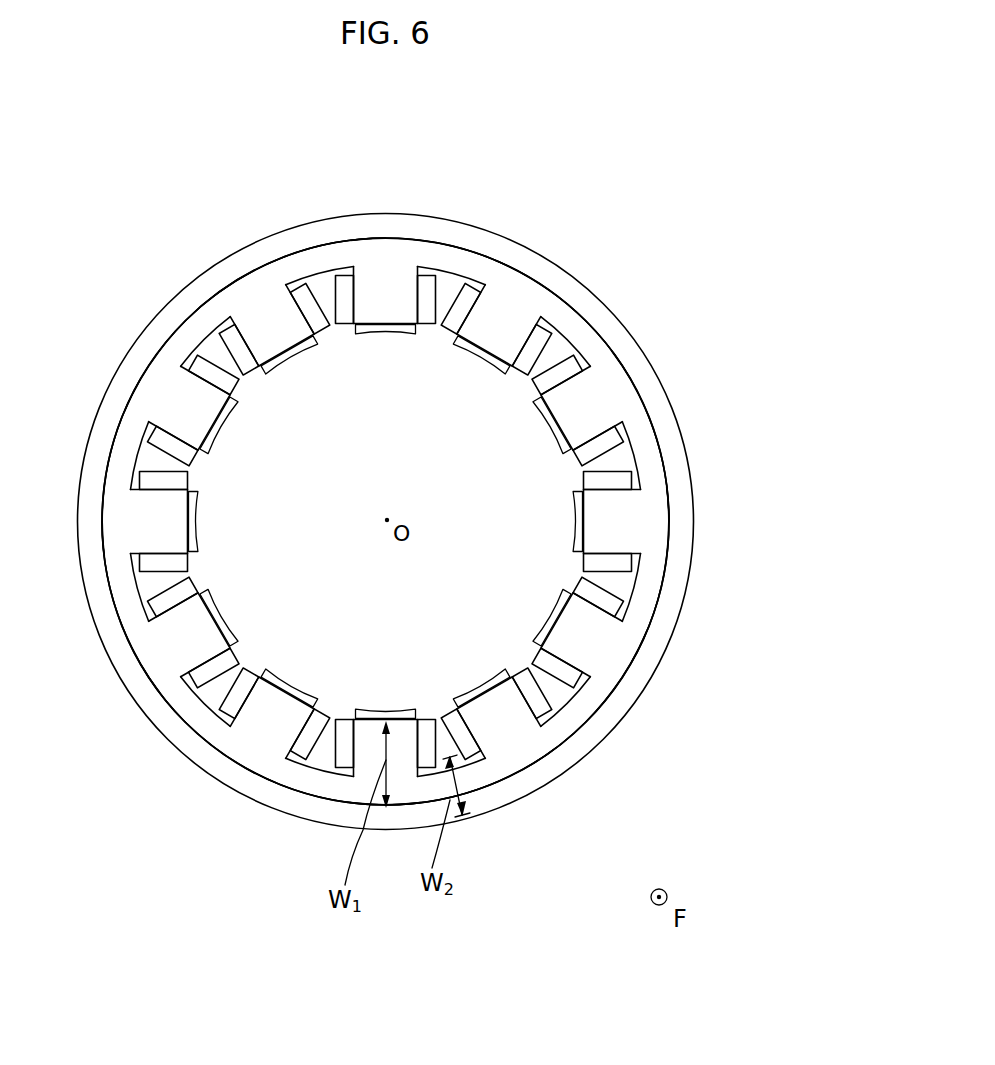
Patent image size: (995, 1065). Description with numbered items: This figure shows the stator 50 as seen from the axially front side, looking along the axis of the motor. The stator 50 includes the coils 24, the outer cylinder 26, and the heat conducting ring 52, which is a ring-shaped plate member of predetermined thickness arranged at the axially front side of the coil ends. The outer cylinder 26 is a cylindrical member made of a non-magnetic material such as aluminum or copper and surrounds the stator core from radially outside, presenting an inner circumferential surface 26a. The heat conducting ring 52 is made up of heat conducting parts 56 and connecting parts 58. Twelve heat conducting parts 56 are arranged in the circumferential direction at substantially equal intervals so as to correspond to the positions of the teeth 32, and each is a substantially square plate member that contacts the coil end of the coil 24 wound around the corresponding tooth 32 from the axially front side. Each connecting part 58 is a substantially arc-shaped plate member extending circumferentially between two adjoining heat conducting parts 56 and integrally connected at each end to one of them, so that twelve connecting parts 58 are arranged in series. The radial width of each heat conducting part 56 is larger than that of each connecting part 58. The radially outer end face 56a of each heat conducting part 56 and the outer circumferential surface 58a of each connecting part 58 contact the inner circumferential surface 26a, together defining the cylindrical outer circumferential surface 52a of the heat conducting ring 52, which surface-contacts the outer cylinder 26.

The stator 50 is at (608, 122).
The heat conducting ring 52 is at (463, 246).
The outer circumferential surface of the heat conducting ring 52a is at (193, 307).
The coil 24 is at (348, 278).
The outer cylinder 26 is at (97, 445).
The inner circumferential surface of the outer cylinder 26a is at (247, 763).
The tooth 32 is at (388, 333).
The heat conducting part 56 is at (605, 513).
The radially outer end face of the heat conducting part 56a is at (525, 270).
The connecting part 58 is at (582, 332).
The outer circumferential surface of the connecting part 58a is at (573, 305).